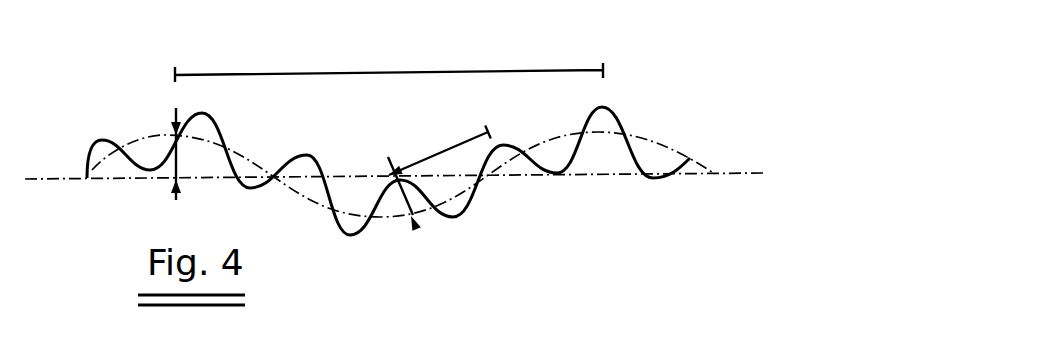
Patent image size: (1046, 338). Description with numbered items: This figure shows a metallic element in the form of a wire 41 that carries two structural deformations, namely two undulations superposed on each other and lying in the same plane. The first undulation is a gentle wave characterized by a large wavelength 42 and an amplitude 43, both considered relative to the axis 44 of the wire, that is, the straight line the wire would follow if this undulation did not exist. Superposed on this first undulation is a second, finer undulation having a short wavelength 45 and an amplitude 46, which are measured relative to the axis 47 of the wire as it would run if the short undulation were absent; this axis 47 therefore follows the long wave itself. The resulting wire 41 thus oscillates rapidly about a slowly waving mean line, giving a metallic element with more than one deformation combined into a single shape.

The wire 41 is at (575, 160).
The large wavelength 42 is at (389, 50).
The amplitude 43 is at (176, 162).
The axis 44 is at (723, 172).
The short wavelength 45 is at (440, 137).
The amplitude 46 is at (406, 200).
The axis 47 is at (648, 142).